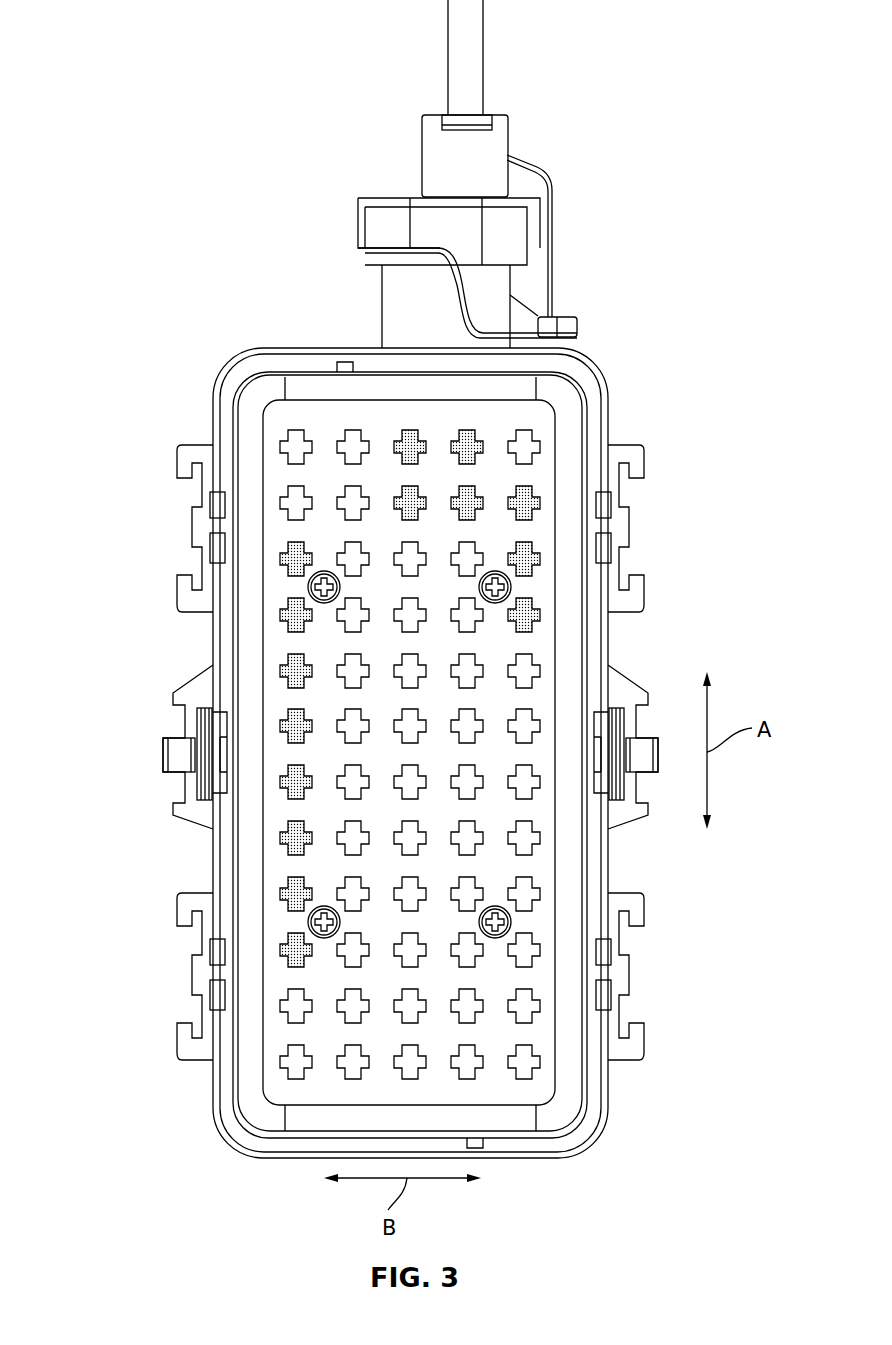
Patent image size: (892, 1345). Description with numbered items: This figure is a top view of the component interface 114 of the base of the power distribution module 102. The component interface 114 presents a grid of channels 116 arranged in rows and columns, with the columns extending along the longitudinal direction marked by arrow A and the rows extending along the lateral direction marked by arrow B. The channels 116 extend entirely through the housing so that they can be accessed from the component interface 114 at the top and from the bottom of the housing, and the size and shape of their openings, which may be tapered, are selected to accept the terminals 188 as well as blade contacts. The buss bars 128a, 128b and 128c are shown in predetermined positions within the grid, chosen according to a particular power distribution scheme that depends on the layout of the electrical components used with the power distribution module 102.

The power distribution module 102 is at (171, 76).
The component interface 114 is at (542, 458).
The channels 116 is at (535, 438).
The terminals 188 is at (535, 503).
The buss bar 128a is at (288, 560).
The buss bar 128b is at (535, 560).
The buss bar 128c is at (407, 432).